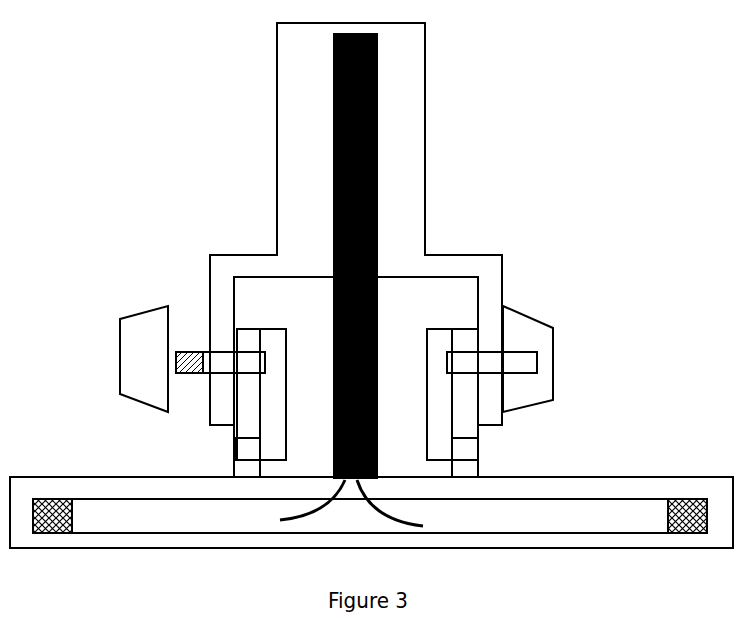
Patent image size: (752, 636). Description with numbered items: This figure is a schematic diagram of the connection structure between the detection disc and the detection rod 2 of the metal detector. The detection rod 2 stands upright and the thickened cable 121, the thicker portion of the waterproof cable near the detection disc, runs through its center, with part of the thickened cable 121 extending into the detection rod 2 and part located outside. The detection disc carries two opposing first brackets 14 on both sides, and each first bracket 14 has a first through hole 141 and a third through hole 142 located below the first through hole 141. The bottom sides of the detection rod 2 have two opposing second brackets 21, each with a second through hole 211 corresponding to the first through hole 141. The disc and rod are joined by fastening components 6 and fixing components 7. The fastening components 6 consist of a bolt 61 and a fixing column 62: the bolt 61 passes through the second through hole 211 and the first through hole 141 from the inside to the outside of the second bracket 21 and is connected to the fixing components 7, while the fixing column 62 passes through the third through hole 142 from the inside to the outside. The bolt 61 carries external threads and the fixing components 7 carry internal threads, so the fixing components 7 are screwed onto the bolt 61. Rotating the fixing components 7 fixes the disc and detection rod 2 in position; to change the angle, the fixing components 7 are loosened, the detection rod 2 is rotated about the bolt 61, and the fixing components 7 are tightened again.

The detection rod 2 is at (420, 103).
The second bracket 21 is at (227, 303).
The thickened cable 121 is at (377, 237).
The fastening components 6 is at (275, 350).
The bolt 61 is at (184, 350).
The fixing column 62 is at (252, 448).
The fixing components 7 is at (140, 378).
The first bracket 14 is at (465, 345).
The first through hole 141 is at (463, 365).
The third through hole 142 is at (463, 450).
The second through hole 211 is at (490, 362).